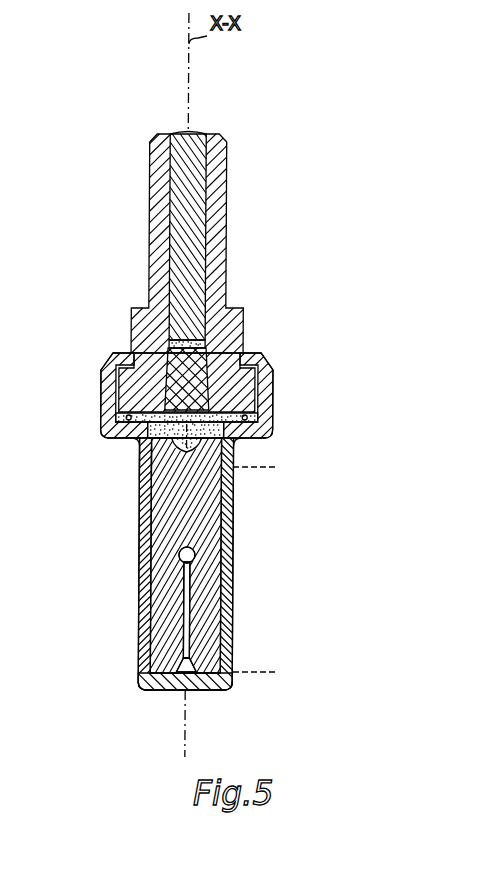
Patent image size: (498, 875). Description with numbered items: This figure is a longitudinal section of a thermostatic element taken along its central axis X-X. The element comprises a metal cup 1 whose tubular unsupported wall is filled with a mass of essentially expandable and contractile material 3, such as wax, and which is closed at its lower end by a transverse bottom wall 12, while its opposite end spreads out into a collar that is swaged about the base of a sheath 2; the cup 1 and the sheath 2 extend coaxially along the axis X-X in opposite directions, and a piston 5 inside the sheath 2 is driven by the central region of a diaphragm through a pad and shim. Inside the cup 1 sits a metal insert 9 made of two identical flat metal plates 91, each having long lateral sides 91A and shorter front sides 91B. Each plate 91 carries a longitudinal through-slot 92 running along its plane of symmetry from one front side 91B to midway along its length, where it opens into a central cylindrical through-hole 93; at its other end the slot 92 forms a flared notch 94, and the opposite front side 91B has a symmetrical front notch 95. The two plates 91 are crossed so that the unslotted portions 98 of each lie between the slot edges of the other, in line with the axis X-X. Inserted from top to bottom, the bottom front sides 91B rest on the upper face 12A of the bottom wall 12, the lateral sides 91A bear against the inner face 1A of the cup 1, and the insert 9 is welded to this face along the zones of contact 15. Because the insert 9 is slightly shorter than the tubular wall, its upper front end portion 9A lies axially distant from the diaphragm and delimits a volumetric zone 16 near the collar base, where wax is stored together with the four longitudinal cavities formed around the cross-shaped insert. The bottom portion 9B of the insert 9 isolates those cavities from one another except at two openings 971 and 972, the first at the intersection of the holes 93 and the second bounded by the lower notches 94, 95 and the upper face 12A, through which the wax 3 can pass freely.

The metal cup 1 is at (100, 380).
The inner face of the cup 1A is at (155, 618).
The sheath 2 is at (226, 165).
The mass of expandable and contractile material 3 is at (250, 362).
The piston 5 is at (182, 180).
The metal insert 9 is at (318, 440).
The upper front end portion of the insert 9A is at (270, 442).
The bottom portion of the insert 9B is at (270, 467).
The bottom wall 12 is at (178, 700).
The upper face of the bottom wall 12A is at (211, 667).
The zones of contact 15 is at (153, 500).
The volumetric zone 16 is at (225, 428).
The flat metal plate 91 is at (139, 650).
The lateral sides of the plate 91A is at (157, 482).
The front sides of the plate 91B is at (150, 690).
The longitudinal through-slot 92 is at (191, 598).
The through-hole 93 is at (197, 556).
The flared notch 94 is at (175, 690).
The front notch 95 is at (128, 414).
The opening 971 is at (181, 553).
The opening 972 is at (205, 691).
The unslotted portions of the plates 98 is at (183, 582).